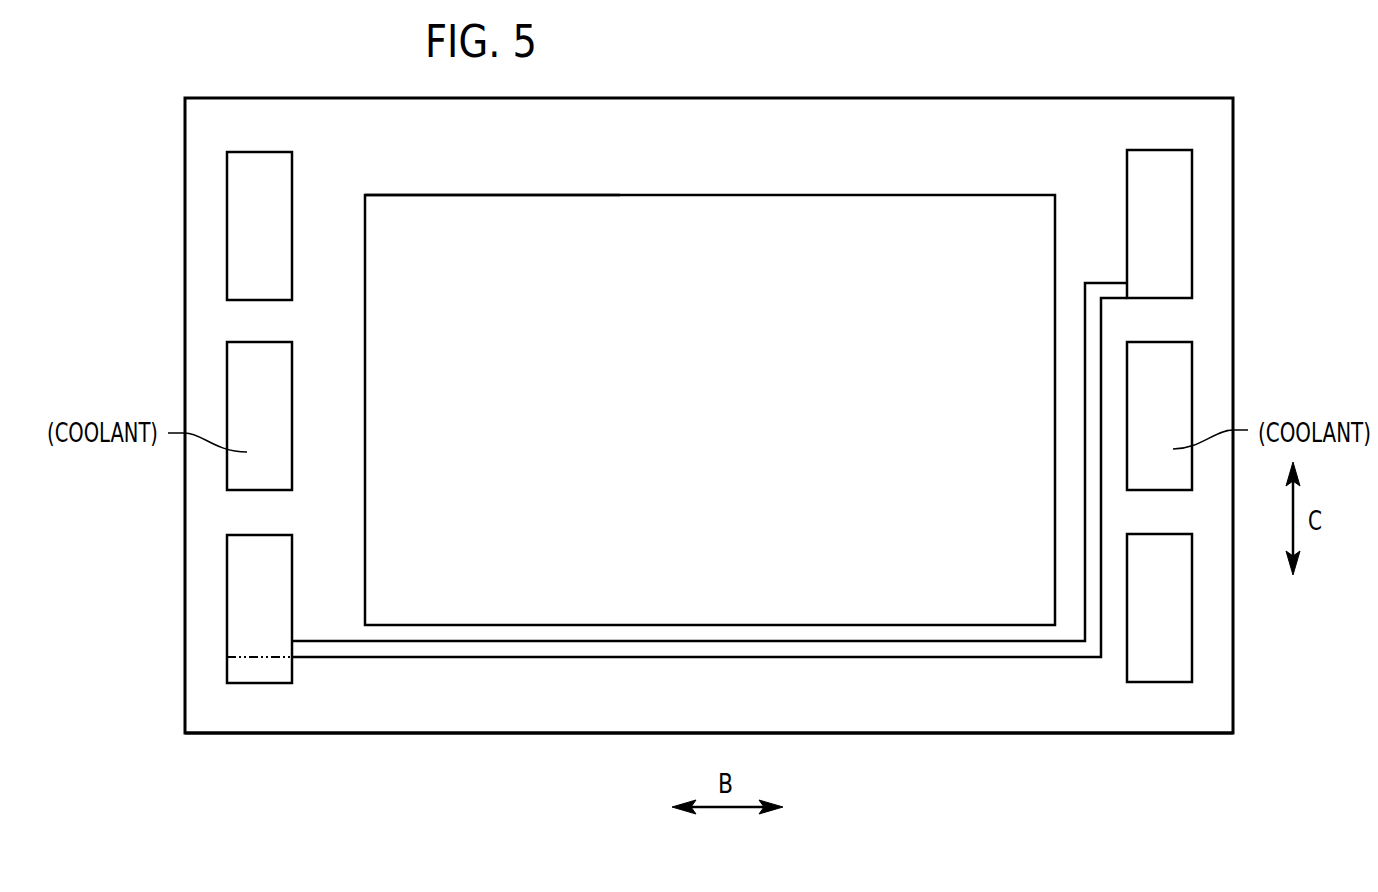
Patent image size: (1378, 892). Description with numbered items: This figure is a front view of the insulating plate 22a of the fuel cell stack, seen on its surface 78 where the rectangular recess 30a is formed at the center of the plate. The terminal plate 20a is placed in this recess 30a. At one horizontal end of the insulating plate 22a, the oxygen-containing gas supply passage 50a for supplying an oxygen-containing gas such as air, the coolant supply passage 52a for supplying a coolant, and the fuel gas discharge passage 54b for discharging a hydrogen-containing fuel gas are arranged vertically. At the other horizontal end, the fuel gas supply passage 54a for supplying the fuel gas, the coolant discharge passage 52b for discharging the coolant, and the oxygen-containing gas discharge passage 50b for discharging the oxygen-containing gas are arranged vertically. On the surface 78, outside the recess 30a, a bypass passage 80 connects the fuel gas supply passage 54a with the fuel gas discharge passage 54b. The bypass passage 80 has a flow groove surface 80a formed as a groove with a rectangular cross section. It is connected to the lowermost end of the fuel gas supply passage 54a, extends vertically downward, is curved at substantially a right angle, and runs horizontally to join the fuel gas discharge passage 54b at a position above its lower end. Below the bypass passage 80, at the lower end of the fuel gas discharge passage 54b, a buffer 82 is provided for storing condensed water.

The insulating plate 22a is at (931, 80).
The terminal plate 20a is at (597, 228).
The rectangular recess 30a is at (478, 195).
The oxygen-containing gas supply passage 50a is at (259, 226).
The oxygen-containing gas discharge passage 50b is at (1159, 608).
The coolant supply passage 52a is at (259, 416).
The coolant discharge passage 52b is at (1159, 416).
The fuel gas supply passage 54a is at (1159, 224).
The fuel gas discharge passage 54b is at (259, 609).
The surface 78 is at (875, 715).
The bypass passage 80 is at (814, 641).
The flow groove surface 80a is at (707, 648).
The buffer 82 is at (283, 676).